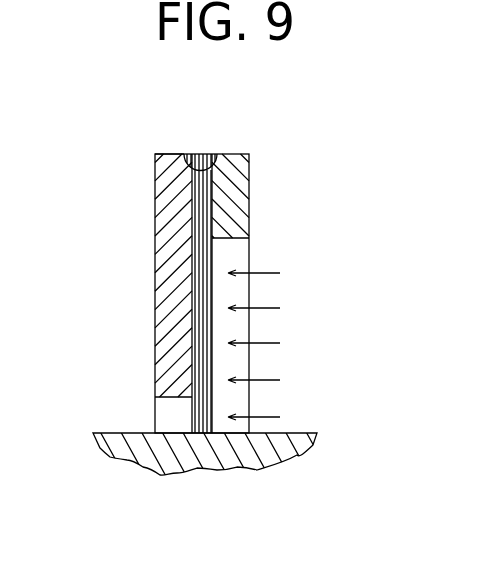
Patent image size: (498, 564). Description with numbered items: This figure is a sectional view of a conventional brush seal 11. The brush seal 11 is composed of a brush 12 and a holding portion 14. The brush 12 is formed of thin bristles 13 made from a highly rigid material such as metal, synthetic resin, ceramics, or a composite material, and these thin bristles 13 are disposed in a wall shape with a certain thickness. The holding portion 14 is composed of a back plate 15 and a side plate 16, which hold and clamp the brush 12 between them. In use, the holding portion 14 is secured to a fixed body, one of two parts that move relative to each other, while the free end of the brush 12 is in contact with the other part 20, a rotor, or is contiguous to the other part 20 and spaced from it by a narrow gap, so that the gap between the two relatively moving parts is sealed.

The brush seal 11 is at (262, 183).
The brush 12 is at (214, 286).
The thin bristles 13 is at (213, 331).
The holding portion 14 is at (152, 165).
The back plate 15 is at (155, 228).
The side plate 16 is at (240, 212).
The other part 20 is at (247, 448).